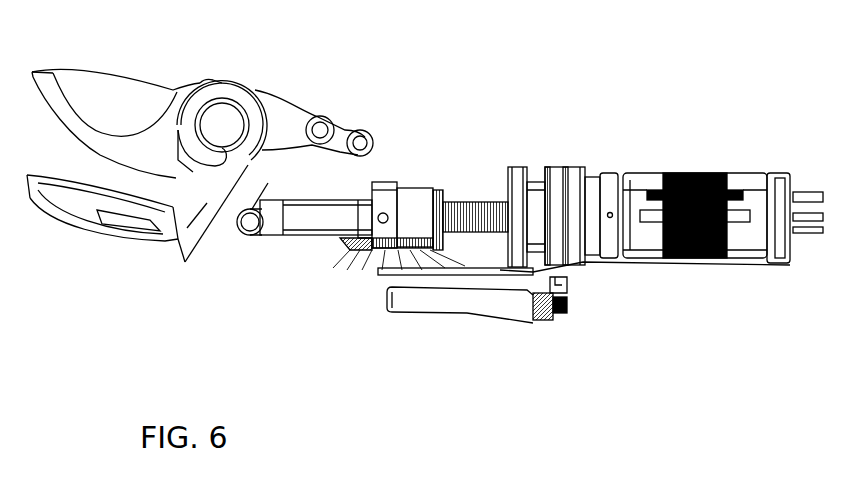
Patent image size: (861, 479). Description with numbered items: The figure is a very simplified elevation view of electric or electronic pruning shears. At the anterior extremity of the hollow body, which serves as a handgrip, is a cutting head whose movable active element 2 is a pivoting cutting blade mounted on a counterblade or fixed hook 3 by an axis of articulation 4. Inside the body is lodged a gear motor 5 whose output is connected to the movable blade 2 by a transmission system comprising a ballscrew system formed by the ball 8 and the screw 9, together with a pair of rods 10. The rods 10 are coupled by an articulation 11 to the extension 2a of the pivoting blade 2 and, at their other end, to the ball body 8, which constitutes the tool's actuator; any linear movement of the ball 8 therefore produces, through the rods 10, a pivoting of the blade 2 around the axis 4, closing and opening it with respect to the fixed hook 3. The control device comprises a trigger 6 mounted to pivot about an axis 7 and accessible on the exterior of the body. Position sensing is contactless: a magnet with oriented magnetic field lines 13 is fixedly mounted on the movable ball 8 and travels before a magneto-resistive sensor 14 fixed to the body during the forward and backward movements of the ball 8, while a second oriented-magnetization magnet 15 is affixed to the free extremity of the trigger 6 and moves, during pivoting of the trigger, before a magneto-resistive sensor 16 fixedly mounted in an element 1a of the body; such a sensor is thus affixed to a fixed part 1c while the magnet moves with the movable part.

The movable active element 2 is at (128, 112).
The extension of pivoting blade 2a is at (237, 197).
The counterblade or fixed hook 3 is at (93, 212).
The axis of articulation 4 is at (222, 118).
The gear motor 5 is at (555, 218).
The trigger 6 is at (467, 303).
The axis 7 is at (398, 303).
The ball 8 is at (417, 207).
The ballscrew 9 is at (463, 213).
The rods 10 is at (312, 213).
The articulation 11 is at (248, 225).
The magnet with oriented magnetic field lines 13 is at (345, 248).
The magneto-resistive sensor 14 is at (390, 270).
The magnet with oriented magnetic field lines 15 is at (537, 310).
The magneto-resistive sensor 16 is at (568, 308).
The element of body 1a is at (565, 287).
The fixed part 1c is at (450, 275).